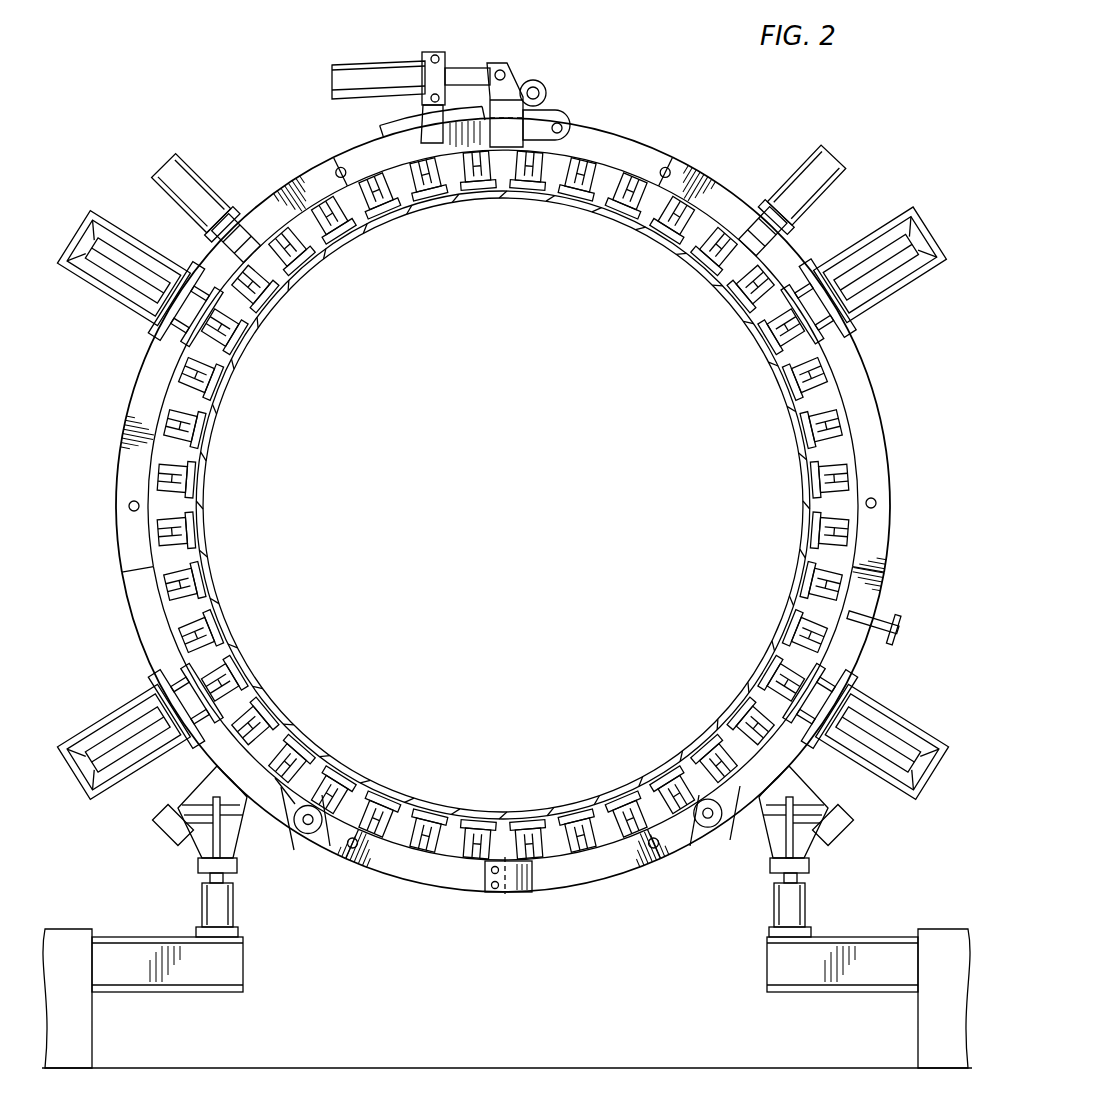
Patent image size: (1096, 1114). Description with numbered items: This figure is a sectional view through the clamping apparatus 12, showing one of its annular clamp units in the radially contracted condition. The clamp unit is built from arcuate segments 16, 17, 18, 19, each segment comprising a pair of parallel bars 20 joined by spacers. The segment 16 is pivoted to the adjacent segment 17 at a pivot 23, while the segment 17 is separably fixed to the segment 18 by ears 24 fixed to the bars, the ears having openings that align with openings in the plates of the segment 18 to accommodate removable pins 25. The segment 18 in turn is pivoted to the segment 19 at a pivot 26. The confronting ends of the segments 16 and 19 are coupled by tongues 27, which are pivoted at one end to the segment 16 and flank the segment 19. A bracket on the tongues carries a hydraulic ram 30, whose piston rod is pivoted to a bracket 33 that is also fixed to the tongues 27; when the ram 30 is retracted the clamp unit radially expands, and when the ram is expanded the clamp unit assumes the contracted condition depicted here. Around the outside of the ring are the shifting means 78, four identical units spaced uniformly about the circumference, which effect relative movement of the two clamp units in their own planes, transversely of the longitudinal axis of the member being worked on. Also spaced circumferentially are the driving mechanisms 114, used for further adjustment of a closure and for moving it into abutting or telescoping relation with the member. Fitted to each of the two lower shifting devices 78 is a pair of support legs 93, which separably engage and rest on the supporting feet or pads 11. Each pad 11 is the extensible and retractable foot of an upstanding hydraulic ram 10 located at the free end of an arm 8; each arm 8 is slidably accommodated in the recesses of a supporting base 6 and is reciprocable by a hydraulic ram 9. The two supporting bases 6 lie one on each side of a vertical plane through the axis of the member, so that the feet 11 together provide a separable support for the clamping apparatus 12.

The supporting base 6 is at (88, 1053).
The arm 8 is at (228, 978).
The hydraulic ram 9 is at (954, 203).
The hydraulic ram 10 is at (233, 912).
The supporting foot or pad 11 is at (235, 868).
The clamping apparatus 12 is at (869, 478).
The arcuate segment 16 is at (862, 392).
The arcuate segment 17 is at (645, 870).
The arcuate segment 18 is at (395, 870).
The arcuate segment 19 is at (130, 549).
The bar 20 is at (866, 594).
The pivot 23 is at (710, 828).
The ear 24 is at (522, 893).
The removable pin 25 is at (491, 873).
The pivot 26 is at (303, 834).
The tongue 27 is at (548, 130).
The hydraulic ram 30 is at (393, 66).
The bracket 33 is at (515, 90).
The shifting means 78 is at (196, 151).
The support leg 93 is at (195, 855).
The driving mechanism 114 is at (106, 206).